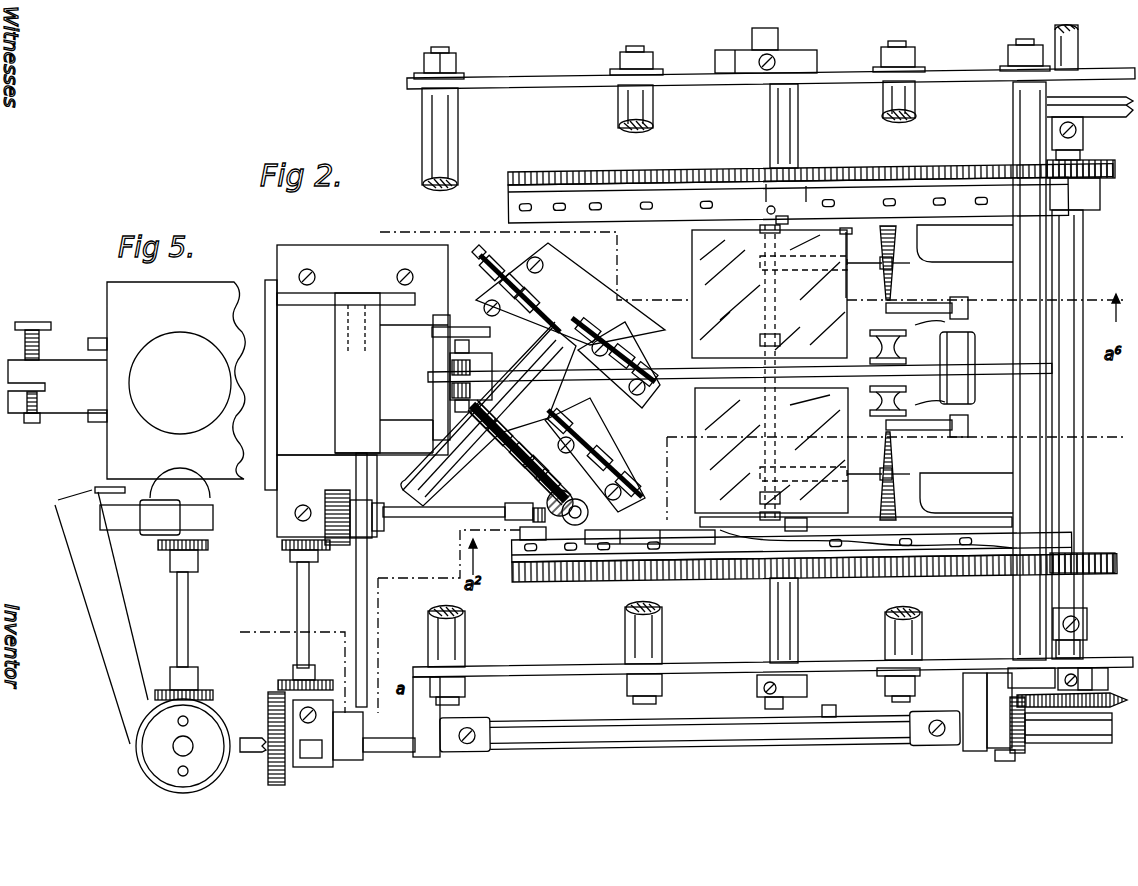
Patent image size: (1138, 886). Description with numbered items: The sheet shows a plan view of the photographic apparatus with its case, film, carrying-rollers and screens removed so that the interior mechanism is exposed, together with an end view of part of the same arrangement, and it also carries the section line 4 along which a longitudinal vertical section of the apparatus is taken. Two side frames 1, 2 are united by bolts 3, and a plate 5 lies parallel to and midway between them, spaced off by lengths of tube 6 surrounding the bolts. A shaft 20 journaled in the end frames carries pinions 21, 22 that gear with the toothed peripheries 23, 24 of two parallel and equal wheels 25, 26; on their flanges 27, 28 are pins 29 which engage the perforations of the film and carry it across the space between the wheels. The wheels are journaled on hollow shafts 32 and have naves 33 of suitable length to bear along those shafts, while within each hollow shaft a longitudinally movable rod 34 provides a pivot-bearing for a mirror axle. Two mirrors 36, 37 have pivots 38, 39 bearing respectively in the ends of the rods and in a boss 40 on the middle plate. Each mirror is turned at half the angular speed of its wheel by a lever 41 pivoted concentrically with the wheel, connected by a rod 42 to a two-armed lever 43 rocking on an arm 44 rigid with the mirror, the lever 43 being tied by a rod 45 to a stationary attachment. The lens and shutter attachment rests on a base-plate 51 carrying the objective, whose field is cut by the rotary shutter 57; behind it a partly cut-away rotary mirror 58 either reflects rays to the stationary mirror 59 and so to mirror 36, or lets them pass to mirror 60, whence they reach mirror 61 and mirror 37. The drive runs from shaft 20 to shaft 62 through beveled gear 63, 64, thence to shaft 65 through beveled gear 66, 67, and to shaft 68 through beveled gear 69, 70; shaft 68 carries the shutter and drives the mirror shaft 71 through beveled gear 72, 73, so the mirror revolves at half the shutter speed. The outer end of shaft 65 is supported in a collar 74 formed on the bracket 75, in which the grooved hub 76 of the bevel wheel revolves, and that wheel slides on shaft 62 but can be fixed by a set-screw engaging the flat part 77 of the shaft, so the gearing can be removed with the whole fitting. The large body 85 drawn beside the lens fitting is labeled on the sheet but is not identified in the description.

In FIG. 2, the side frame 1 is at (563, 78).
In FIG. 2, the side frame 2 is at (577, 673).
In FIG. 2, the bolts 3 is at (443, 190).
In FIG. 2, the section line 4 is at (665, 536).
In FIG. 2, the plate 5 is at (681, 368).
In FIG. 2, the tube 6 is at (459, 140).
In FIG. 2, the shaft 20 is at (1083, 338).
In FIG. 2, the pinion 21 is at (1112, 168).
In FIG. 2, the pinion 22 is at (1109, 575).
In FIG. 2, the toothed periphery 23 is at (900, 170).
In FIG. 2, the toothed periphery 24 is at (906, 578).
In FIG. 2, the wheel 25 is at (838, 170).
In FIG. 2, the wheel 26 is at (843, 580).
In FIG. 2, the flange 27 is at (768, 199).
In FIG. 2, the flange 28 is at (650, 544).
In FIG. 2, the pins 29 is at (836, 208).
In FIG. 2, the hollow shaft 32 is at (790, 698).
In FIG. 2, the nave 33 is at (768, 128).
In FIG. 2, the rod 34 is at (822, 710).
In FIG. 2, the mirror 36 is at (769, 294).
In FIG. 2, the mirror 37 is at (835, 460).
In FIG. 2, the pivot 38 is at (773, 235).
In FIG. 2, the pivot 39 is at (781, 339).
In FIG. 2, the boss 40 is at (771, 450).
In FIG. 2, the lever 41 is at (782, 216).
In FIG. 2, the rod 42 is at (857, 263).
In FIG. 2, the lever 43 is at (897, 300).
In FIG. 2, the arm 44 is at (835, 276).
In FIG. 2, the rod 45 is at (950, 306).
In FIG. 2, the base-plate 51 is at (595, 455).
In FIG. 2, the rotary shutter 57 is at (369, 612).
In FIG. 2, the rotary mirror 58 is at (541, 355).
In FIG. 2, the stationary mirror 59 is at (537, 298).
In FIG. 2, the mirror 60 is at (621, 391).
In FIG. 2, the mirror 61 is at (631, 488).
In FIG. 2, the shaft 62 is at (830, 748).
In FIG. 2, the beveled gear 63 is at (1115, 706).
In FIG. 2, the beveled gear 64 is at (1028, 750).
In FIG. 2, the shaft 65 is at (297, 612).
In FIG. 5, the shaft 65 is at (189, 612).
In FIG. 2, the beveled wheel 66 is at (283, 783).
In FIG. 5, the beveled wheel 66 is at (218, 727).
In FIG. 2, the beveled gear 67 is at (296, 677).
In FIG. 5, the beveled gear 67 is at (200, 693).
In FIG. 2, the shaft 68 is at (421, 518).
In FIG. 2, the beveled gear 69 is at (284, 552).
In FIG. 5, the beveled gear 69 is at (197, 554).
In FIG. 2, the beveled gear 70 is at (325, 500).
In FIG. 5, the beveled gear 70 is at (205, 510).
In FIG. 2, the shaft 71 is at (520, 470).
In FIG. 2, the beveled gear 72 is at (521, 540).
In FIG. 2, the beveled gear 73 is at (548, 476).
In FIG. 2, the collar 74 is at (320, 770).
In FIG. 5, the bracket 75 is at (120, 600).
In FIG. 2, the hub 76 is at (352, 758).
In FIG. 2, the flat part 77 is at (393, 738).
In FIG. 2, the support body 85 is at (278, 350).